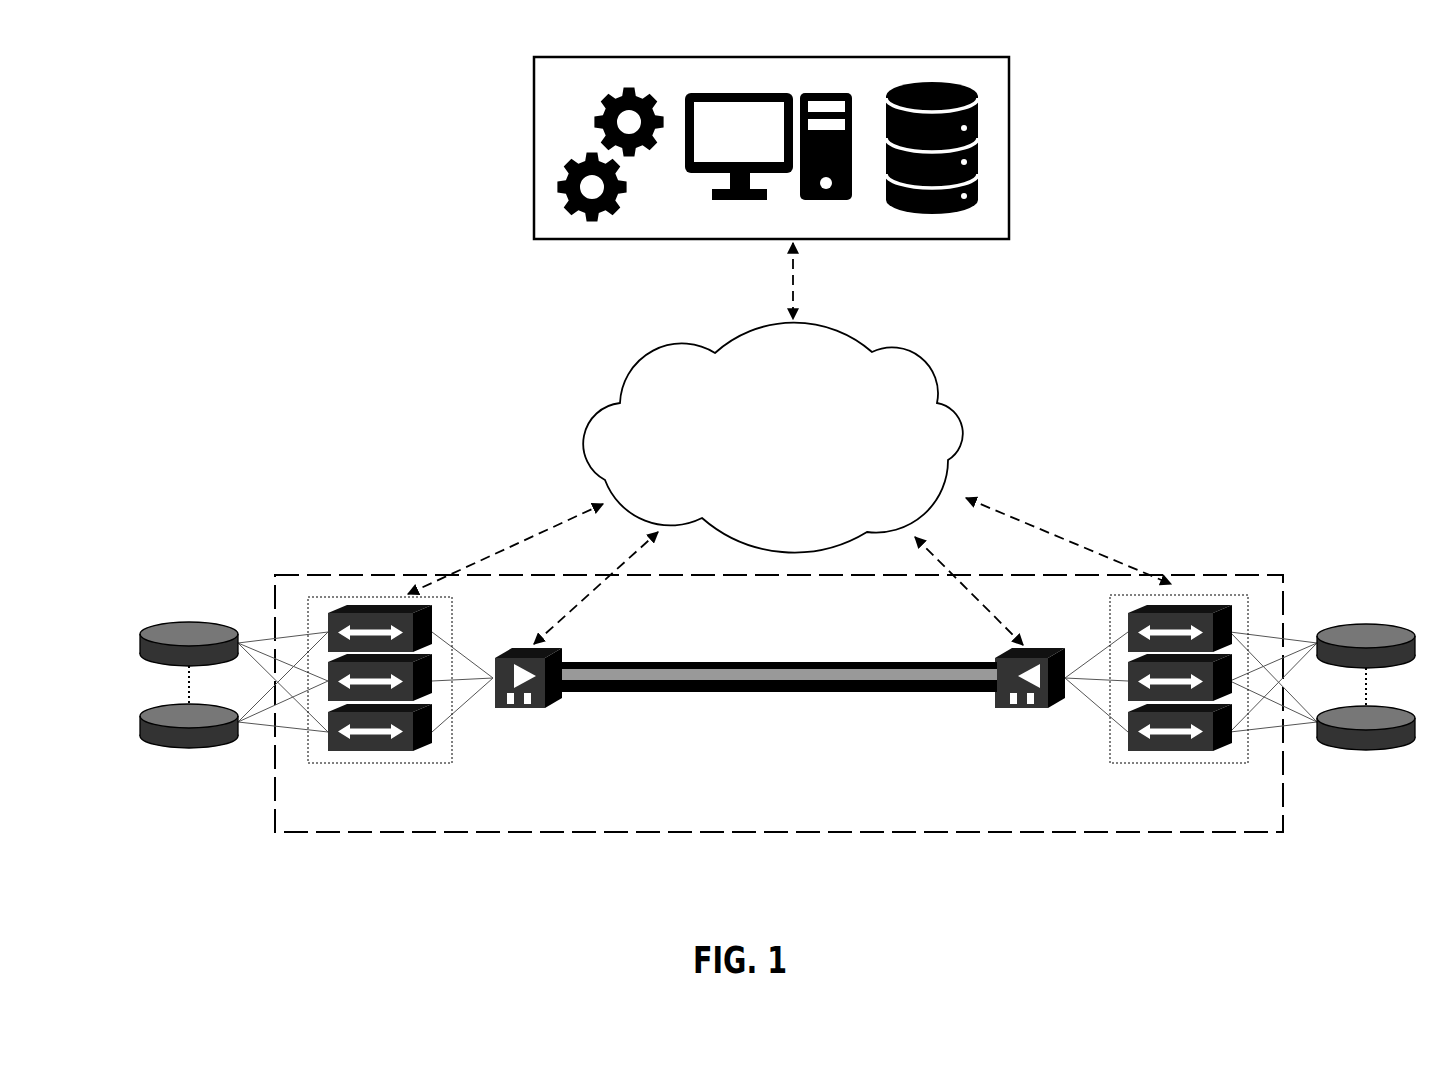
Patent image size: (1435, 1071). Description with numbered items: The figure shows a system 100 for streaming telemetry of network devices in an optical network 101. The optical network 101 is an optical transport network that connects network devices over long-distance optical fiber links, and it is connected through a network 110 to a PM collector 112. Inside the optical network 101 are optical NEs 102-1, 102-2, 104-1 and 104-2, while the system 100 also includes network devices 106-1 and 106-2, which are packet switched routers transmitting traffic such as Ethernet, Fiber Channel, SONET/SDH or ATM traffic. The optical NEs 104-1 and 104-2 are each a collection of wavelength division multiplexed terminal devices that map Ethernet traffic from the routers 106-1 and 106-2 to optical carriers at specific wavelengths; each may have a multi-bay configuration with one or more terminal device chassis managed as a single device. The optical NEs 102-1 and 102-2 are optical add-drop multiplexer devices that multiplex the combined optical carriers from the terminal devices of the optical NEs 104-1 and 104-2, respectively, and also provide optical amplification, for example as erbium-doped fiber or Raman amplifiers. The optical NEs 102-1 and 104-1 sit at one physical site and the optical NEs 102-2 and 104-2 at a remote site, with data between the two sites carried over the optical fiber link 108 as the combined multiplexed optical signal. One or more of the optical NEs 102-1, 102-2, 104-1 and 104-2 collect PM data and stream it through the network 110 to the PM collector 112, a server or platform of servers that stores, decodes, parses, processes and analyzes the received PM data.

The system 100 is at (198, 126).
The optical network 101 is at (1247, 575).
The optical NE 102-1 is at (545, 708).
The optical NE 102-2 is at (1022, 708).
The optical NE 104-1 is at (400, 764).
The optical NE 104-2 is at (1178, 765).
The network device 106-1 is at (196, 746).
The network device 106-2 is at (1340, 748).
The optical fiber link 108 is at (762, 662).
The network 110 is at (773, 438).
The PM collector 112 is at (771, 148).